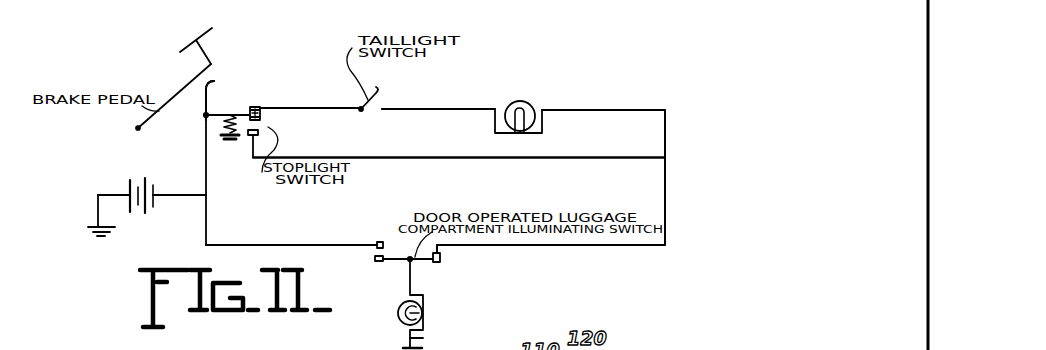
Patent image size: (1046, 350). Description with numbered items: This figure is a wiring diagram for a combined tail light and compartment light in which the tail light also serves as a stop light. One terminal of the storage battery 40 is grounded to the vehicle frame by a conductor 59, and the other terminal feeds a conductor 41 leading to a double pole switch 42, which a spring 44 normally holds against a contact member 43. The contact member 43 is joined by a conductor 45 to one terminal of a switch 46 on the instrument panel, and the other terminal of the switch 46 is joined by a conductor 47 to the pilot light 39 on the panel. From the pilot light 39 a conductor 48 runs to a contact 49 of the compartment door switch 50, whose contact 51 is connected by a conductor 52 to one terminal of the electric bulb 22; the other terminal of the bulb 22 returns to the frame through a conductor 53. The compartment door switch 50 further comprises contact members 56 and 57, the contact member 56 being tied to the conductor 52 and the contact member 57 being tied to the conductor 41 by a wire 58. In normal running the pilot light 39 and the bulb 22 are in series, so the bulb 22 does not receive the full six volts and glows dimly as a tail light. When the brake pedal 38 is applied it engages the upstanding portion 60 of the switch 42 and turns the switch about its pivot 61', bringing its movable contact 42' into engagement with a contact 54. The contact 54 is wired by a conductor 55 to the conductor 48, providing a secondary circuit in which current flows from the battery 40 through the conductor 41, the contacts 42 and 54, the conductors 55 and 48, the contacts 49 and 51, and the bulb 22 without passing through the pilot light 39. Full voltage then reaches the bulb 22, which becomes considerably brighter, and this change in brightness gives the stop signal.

The brake pedal 38 is at (212, 57).
The upstanding portion 60 is at (202, 92).
The pivot 61' is at (189, 109).
The storage battery 40 is at (142, 180).
The conductor 59 is at (98, 205).
The conductor 41 is at (178, 195).
The wire 58 is at (295, 234).
The contact member 43 is at (257, 107).
The spring 44 is at (231, 116).
The movable contact 42' is at (285, 116).
The double pole switch 42 is at (285, 129).
The contact 54 is at (250, 135).
The conductor 45 is at (322, 107).
The switch 46 is at (377, 84).
The conductor 47 is at (442, 108).
The pilot light 39 is at (520, 99).
The conductor 55 is at (432, 154).
The conductor 48 is at (640, 110).
The contact member 57 is at (382, 242).
The contact member 56 is at (375, 262).
The compartment door switch 50 is at (397, 265).
The contact 49 is at (440, 255).
The contact 51 is at (440, 263).
The conductor 52 is at (406, 294).
The electric bulb 22 is at (425, 303).
The conductor 53 is at (423, 338).